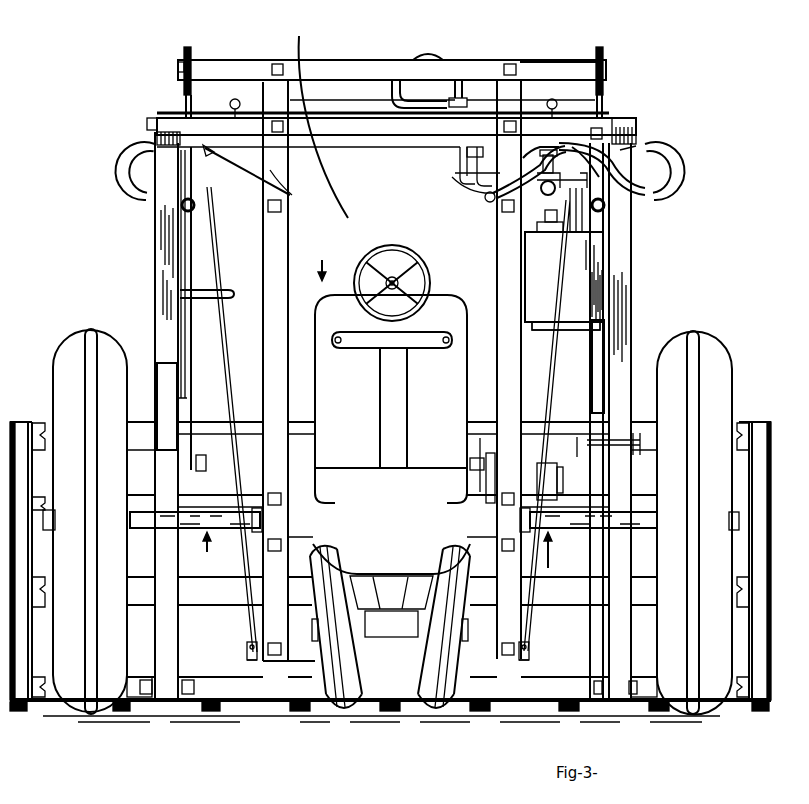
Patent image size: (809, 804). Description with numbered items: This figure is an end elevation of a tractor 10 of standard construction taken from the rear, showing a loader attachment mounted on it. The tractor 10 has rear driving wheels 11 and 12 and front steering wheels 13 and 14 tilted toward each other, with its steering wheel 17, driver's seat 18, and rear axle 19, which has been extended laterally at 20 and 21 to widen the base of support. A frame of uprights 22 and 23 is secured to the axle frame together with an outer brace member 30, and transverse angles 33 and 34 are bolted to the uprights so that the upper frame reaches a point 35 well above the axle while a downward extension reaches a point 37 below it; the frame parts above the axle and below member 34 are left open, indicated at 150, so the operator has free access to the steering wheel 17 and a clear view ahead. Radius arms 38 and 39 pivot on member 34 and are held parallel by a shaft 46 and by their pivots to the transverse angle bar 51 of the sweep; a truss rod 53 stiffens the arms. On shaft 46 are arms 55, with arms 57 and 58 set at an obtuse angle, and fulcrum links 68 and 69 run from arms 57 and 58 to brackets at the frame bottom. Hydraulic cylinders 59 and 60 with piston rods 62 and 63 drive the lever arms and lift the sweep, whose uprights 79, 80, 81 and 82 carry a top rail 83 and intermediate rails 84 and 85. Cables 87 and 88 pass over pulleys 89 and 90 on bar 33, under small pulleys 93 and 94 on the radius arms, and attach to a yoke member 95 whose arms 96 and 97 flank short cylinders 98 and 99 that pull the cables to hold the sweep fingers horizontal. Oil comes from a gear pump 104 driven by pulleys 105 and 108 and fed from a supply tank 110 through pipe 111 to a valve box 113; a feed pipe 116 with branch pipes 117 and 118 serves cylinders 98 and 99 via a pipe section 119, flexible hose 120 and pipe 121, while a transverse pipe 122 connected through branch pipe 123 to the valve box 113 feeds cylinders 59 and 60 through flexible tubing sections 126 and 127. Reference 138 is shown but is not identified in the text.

The tractor 10 is at (319, 262).
The rear driving wheel 11 is at (720, 358).
The rear driving wheel 12 is at (70, 352).
The front steering wheel 13 is at (335, 718).
The front steering wheel 14 is at (432, 718).
The steering wheel 17 is at (418, 262).
The driver's seat 18 is at (360, 350).
The rear axle 19 is at (560, 530).
The axle extension 20 is at (217, 547).
The axle extension 21 is at (547, 558).
The upright 22 is at (289, 232).
The upright 23 is at (497, 235).
The outer brace member 30 is at (262, 592).
The transverse angle 33 is at (337, 66).
The transverse angle 34 is at (365, 125).
The upper frame point 35 is at (536, 58).
The lower frame point 37 is at (500, 660).
The radius arm 38 is at (157, 630).
The radius arm 39 is at (620, 633).
The shaft 46 is at (245, 420).
The transverse angle bar 51 is at (303, 682).
The truss rod 53 is at (490, 478).
The arm 55 is at (642, 446).
The arm 57 is at (560, 372).
The arm 58 is at (222, 330).
The hydraulic cylinder 59 is at (632, 230).
The hydraulic cylinder 60 is at (160, 235).
The piston rod 62 is at (618, 352).
The piston rod 63 is at (165, 362).
The fulcrum link 68 is at (528, 618).
The fulcrum link 69 is at (243, 618).
The upright 79 is at (752, 702).
The upright 80 is at (540, 711).
The upright 81 is at (190, 694).
The upright 82 is at (18, 702).
The transverse top rail 83 is at (638, 418).
The intermediate transverse rail 84 is at (640, 498).
The intermediate transverse rail 85 is at (638, 576).
The cable 87 is at (603, 100).
The cable 88 is at (186, 97).
The pulley 89 is at (603, 52).
The pulley 90 is at (191, 52).
The small pulley 93 is at (640, 150).
The small pulley 94 is at (193, 186).
The yoke member 95 is at (600, 212).
The yoke arm 96 is at (188, 408).
The yoke arm 97 is at (600, 410).
The short cylinder 98 is at (604, 330).
The short cylinder 99 is at (193, 348).
The gear pump 104 is at (562, 470).
The pulley 105 is at (485, 437).
The pulley 108 is at (468, 462).
The supply tank 110 is at (525, 270).
The pipe 111 is at (528, 360).
The valve box 113 is at (516, 127).
The transverse feed pipe 116 is at (475, 95).
The branch pipe 117 is at (558, 110).
The branch pipe 118 is at (247, 233).
The short pipe section 119 is at (458, 174).
The flexible hose 120 is at (432, 55).
The pipe 121 is at (470, 190).
The transverse pipe 122 is at (365, 150).
The branch pipe 123 is at (485, 147).
The flexible tubing section 126 is at (672, 165).
The flexible tubing section 127 is at (229, 106).
The hose 138 is at (480, 205).
The open view area 150 is at (313, 118).